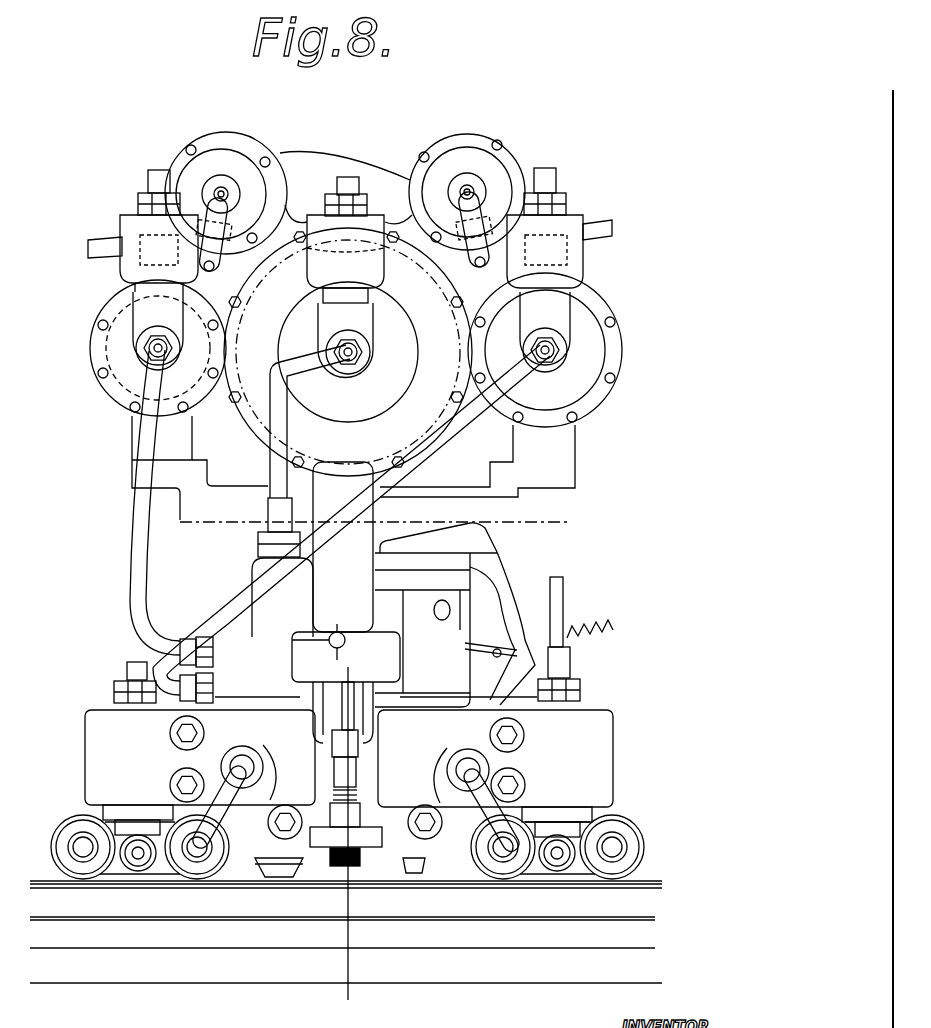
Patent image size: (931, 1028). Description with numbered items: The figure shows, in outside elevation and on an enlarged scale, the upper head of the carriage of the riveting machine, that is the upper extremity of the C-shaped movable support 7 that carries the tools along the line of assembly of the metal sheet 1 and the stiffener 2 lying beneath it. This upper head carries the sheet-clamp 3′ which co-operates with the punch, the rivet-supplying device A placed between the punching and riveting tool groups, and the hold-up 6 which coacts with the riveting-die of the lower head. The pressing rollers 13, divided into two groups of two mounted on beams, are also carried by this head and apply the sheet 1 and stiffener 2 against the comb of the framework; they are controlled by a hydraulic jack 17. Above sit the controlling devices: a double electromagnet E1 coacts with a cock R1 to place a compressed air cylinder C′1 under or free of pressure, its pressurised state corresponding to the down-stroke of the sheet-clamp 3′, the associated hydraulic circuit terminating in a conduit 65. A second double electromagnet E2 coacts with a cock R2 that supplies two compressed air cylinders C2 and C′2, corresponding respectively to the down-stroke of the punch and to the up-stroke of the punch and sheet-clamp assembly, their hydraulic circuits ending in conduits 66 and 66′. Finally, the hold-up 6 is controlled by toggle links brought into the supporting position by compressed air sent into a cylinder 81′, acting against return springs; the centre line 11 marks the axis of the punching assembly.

The double electromagnet E2 is at (215, 152).
The double electromagnet E1 is at (458, 152).
The cock R2 is at (262, 212).
The cock R1 is at (493, 237).
The compressed air cylinder C2 is at (430, 290).
The compressed air cylinder C′1 is at (585, 308).
The compressed air cylinder C′2 is at (107, 383).
The conduit 66 is at (280, 436).
The conduit 66′ is at (138, 513).
The conduit 65 is at (210, 597).
The center pin line 11 is at (340, 660).
The cylinder 81′ is at (505, 672).
The movable support 7 is at (92, 732).
The hydraulic jack 17 is at (117, 810).
The rollers 13 is at (60, 822).
The metal sheet 1 is at (37, 883).
The stiffener 2 is at (55, 886).
The sheet-clamp 3′ is at (297, 872).
The hold-up 6 is at (413, 867).
The rivet-supplying device A is at (357, 863).